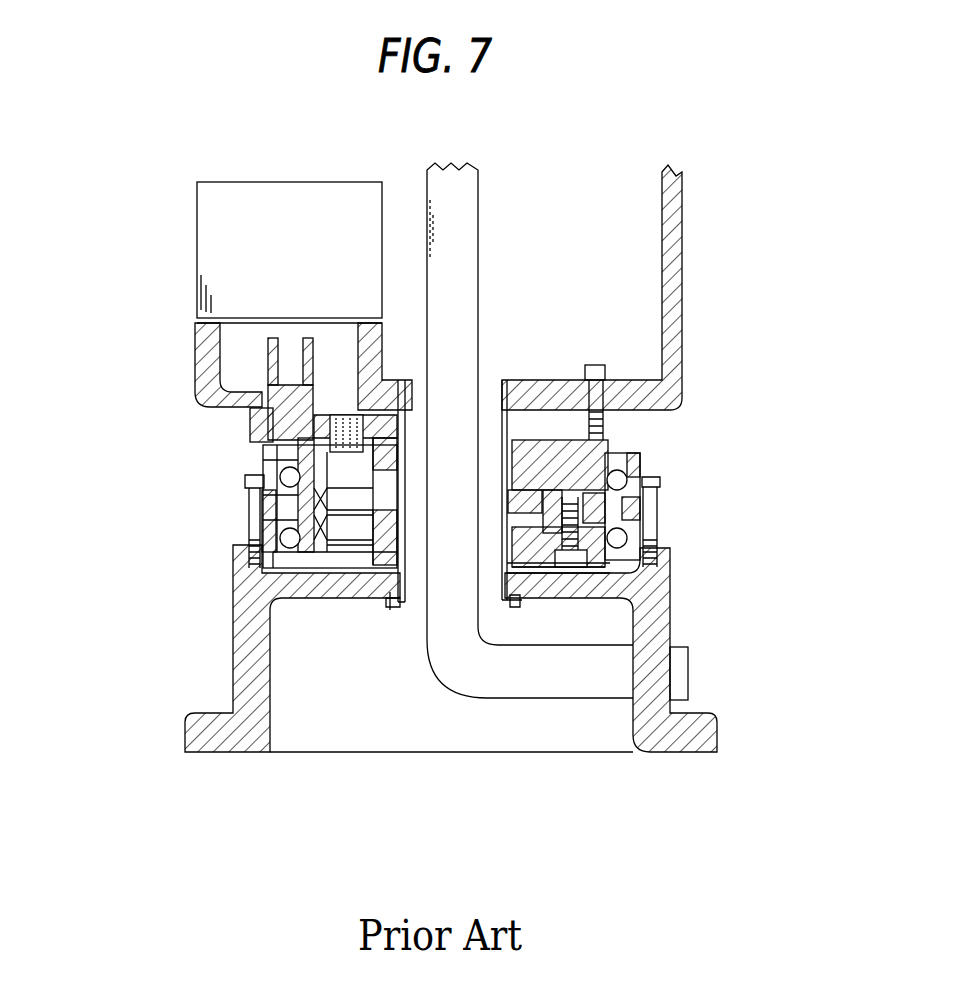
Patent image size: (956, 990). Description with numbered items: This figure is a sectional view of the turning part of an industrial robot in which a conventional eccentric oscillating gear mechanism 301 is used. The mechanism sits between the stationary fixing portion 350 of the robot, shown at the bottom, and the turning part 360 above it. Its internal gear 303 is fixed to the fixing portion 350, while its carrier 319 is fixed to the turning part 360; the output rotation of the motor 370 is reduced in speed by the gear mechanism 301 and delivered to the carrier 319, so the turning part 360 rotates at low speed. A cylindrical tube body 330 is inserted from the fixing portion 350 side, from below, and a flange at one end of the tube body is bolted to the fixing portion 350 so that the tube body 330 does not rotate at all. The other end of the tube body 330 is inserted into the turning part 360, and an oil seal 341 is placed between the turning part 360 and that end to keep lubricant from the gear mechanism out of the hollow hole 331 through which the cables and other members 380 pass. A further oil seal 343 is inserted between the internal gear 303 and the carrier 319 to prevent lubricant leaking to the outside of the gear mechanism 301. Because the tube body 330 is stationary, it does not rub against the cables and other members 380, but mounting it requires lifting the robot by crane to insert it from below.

The eccentric oscillating gear mechanism 301 is at (688, 507).
The internal gear 303 is at (246, 512).
The carrier 319 is at (605, 444).
The cylindrical tube body 330 is at (392, 609).
The hollow hole 331 is at (413, 582).
The oil seal 341 is at (512, 380).
The oil seal 343 is at (270, 450).
The fixing portion 350 is at (667, 747).
The turning part 360 is at (675, 278).
The motor 370 is at (180, 249).
The cables and other members 380 is at (543, 688).